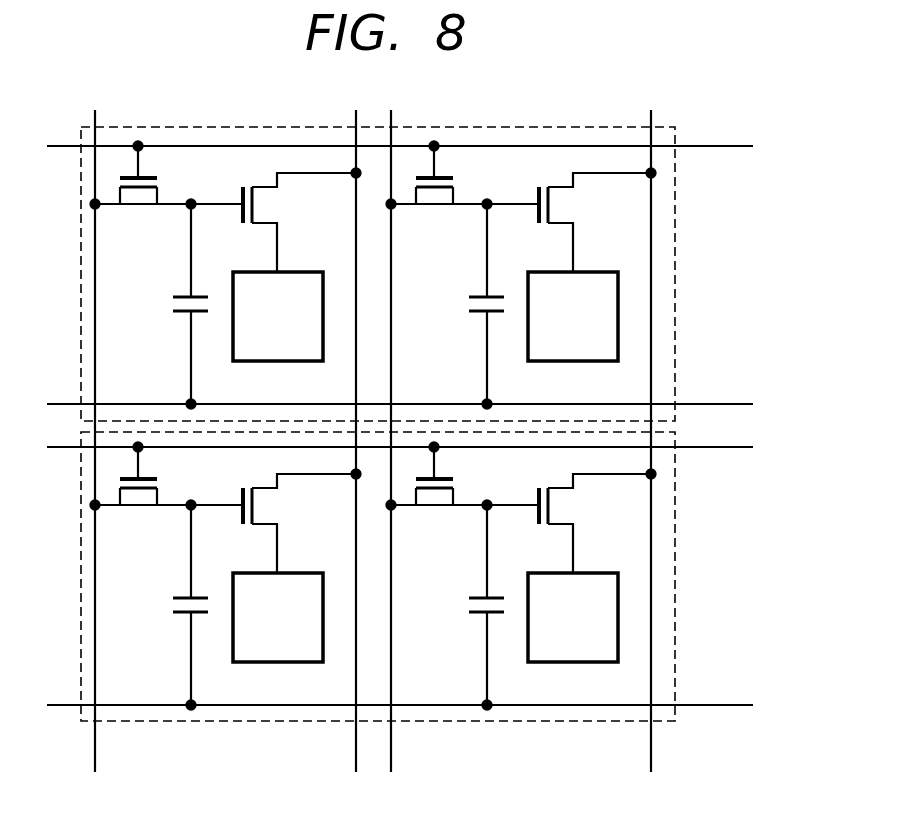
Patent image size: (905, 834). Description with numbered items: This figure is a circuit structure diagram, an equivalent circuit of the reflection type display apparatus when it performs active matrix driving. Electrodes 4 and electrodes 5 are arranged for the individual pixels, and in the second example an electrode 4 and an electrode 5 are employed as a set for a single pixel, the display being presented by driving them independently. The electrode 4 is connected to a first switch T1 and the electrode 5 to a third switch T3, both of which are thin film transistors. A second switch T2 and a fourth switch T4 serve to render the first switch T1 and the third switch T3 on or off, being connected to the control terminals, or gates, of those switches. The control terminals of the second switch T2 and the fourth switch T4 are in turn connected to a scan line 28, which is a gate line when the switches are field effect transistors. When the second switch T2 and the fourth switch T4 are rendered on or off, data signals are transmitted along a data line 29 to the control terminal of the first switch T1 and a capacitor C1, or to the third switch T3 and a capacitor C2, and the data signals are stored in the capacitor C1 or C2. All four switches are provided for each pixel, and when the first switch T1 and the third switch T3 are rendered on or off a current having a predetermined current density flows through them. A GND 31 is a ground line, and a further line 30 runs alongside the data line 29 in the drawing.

The electrode 4 is at (248, 270).
The electrode 5 is at (544, 270).
The scan line 28 is at (717, 146).
The data line 29 is at (95, 746).
The power supply line 30 is at (354, 746).
The GND 31 is at (716, 404).
The first switch T1 is at (267, 204).
The second switch T2 is at (140, 197).
The third switch T3 is at (563, 204).
The fourth switch T4 is at (436, 197).
The capacitor C1 is at (172, 302).
The capacitor C2 is at (468, 302).